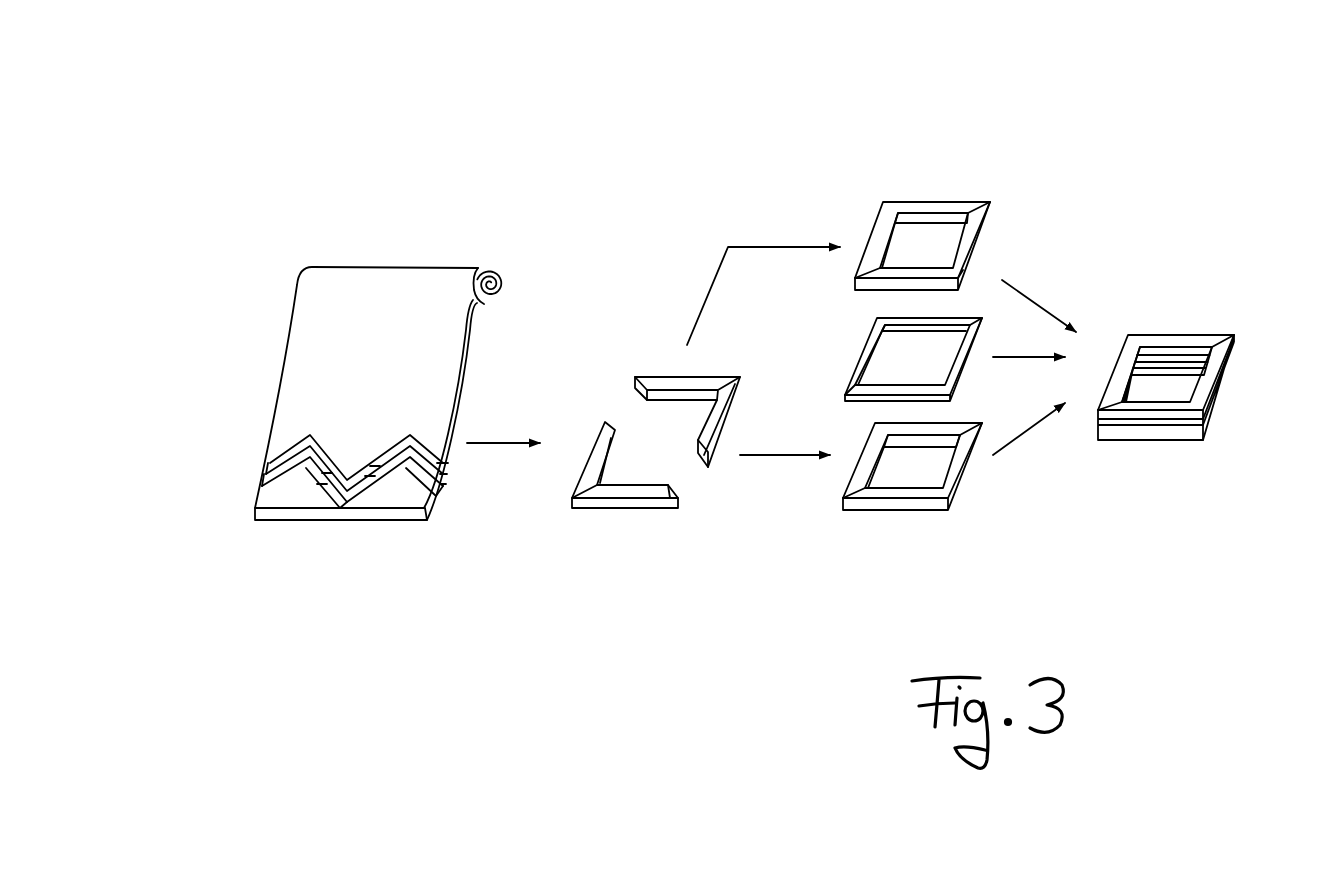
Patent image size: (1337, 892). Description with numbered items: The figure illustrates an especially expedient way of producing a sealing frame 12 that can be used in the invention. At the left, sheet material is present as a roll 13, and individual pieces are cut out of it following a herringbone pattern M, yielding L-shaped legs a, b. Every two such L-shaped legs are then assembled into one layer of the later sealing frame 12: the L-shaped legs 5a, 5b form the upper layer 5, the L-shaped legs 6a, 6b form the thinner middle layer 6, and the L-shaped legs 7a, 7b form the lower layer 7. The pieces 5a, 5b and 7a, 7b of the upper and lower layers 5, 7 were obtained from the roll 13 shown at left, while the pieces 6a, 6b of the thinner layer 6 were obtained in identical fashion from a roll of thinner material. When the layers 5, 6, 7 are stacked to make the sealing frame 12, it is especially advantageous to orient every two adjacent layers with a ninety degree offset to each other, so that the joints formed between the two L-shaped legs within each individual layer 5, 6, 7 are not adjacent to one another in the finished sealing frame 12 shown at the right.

The roll 13 is at (378, 290).
The herringbone pattern M is at (372, 441).
The L-shaped leg a is at (658, 382).
The L-shaped leg b is at (598, 503).
The layer 5 is at (925, 199).
The L-shaped leg 5a is at (917, 208).
The L-shaped leg 5b is at (973, 228).
The layer 6 is at (876, 348).
The L-shaped leg 6a is at (866, 373).
The L-shaped leg 6b is at (905, 337).
The layer 7 is at (894, 518).
The L-shaped leg 7a is at (866, 461).
The L-shaped leg 7b is at (932, 494).
The sealing frame 12 is at (1175, 312).